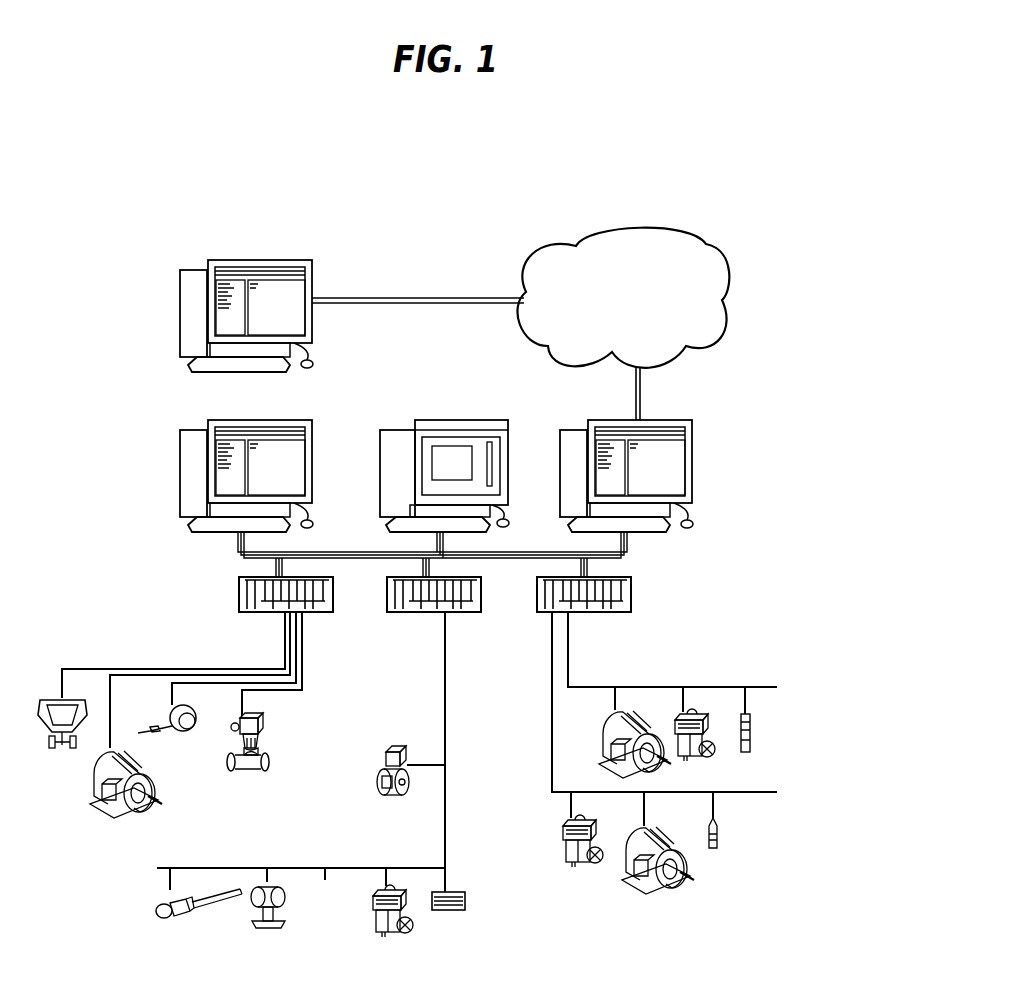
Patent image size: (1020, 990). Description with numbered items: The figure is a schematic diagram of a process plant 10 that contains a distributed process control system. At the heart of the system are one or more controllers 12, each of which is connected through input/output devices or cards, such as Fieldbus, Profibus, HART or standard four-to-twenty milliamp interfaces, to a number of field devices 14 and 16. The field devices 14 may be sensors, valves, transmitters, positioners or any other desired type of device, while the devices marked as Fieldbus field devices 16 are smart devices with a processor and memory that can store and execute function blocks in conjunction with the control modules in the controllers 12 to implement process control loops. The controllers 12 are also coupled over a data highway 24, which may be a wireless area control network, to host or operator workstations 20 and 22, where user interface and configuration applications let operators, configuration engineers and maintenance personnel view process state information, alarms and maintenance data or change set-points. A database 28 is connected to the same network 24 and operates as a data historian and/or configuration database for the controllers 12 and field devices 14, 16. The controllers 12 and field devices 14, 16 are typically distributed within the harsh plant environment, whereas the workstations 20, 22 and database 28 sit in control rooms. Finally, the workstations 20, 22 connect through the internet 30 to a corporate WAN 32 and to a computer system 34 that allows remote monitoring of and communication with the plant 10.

The process plant 10 is at (622, 176).
The controllers 12 is at (239, 592).
The field devices 14 is at (268, 765).
The Fieldbus field devices 16 is at (51, 697).
The operator workstation 20 is at (692, 455).
The operator workstation 22 is at (180, 448).
The data highway 24 is at (347, 550).
The database 28 is at (436, 430).
The internet 30 is at (680, 237).
The corporate WAN 32 is at (471, 297).
The computer system 34 is at (192, 285).